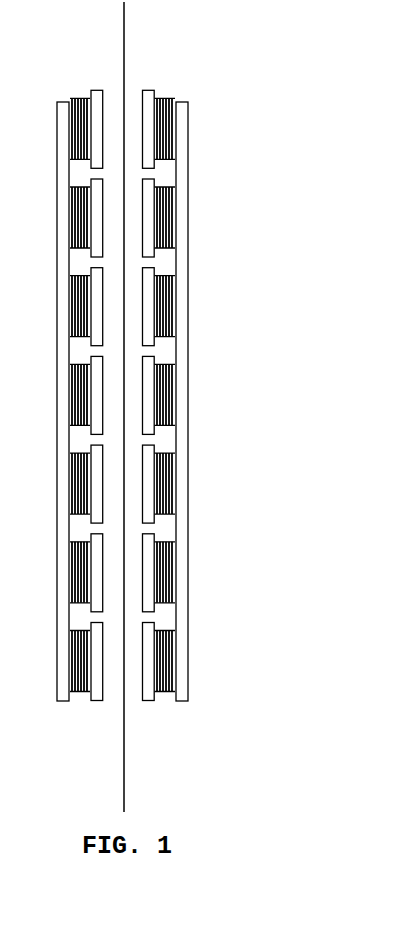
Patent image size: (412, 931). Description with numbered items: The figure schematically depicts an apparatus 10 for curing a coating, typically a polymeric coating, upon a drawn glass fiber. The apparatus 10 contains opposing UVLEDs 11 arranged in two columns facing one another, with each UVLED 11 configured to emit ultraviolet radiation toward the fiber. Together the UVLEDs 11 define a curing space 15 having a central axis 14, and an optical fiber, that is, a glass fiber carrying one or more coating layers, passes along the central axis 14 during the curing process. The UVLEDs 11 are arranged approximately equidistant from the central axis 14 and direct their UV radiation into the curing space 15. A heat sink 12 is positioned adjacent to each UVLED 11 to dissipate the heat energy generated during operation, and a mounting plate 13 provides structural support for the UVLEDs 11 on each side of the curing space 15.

The apparatus 10 is at (220, 407).
The UVLED 11 is at (163, 211).
The heat sink 12 is at (177, 120).
The mounting plate 13 is at (198, 318).
The central axis 14 is at (139, 750).
The curing space 15 is at (120, 577).